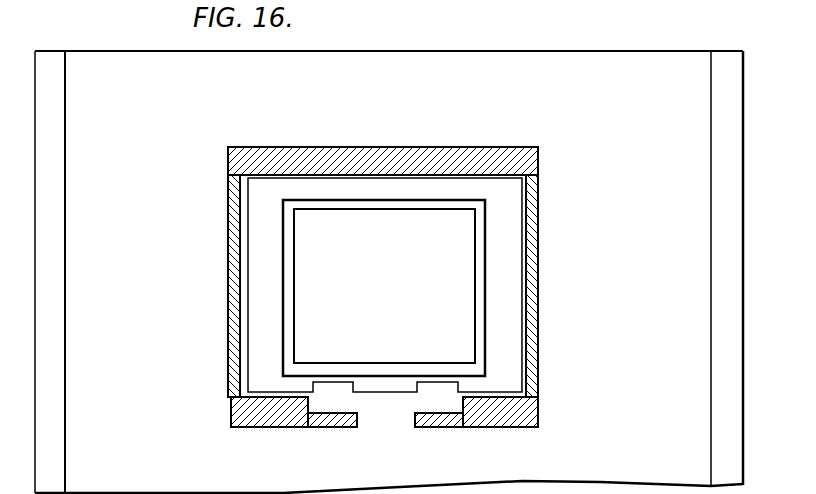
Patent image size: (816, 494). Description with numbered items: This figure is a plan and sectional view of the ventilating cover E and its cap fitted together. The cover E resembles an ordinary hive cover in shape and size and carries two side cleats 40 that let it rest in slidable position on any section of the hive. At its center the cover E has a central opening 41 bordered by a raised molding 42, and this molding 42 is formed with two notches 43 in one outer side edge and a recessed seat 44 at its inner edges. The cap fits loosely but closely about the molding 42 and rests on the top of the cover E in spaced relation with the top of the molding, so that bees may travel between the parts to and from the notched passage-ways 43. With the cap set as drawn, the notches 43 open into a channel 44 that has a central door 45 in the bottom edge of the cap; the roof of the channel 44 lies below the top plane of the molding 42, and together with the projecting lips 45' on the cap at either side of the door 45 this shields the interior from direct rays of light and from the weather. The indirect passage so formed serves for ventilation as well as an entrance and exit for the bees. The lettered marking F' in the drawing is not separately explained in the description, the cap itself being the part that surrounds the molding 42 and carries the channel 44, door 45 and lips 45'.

The cover E is at (614, 51).
The frame F' is at (411, 163).
The side cleats 40 is at (53, 232).
The central opening 41 is at (384, 286).
The raised molding 42 is at (505, 310).
The notches 43 is at (430, 389).
The channel 44 is at (405, 203).
The central door 45 is at (412, 449).
The projecting lips 45' is at (378, 443).